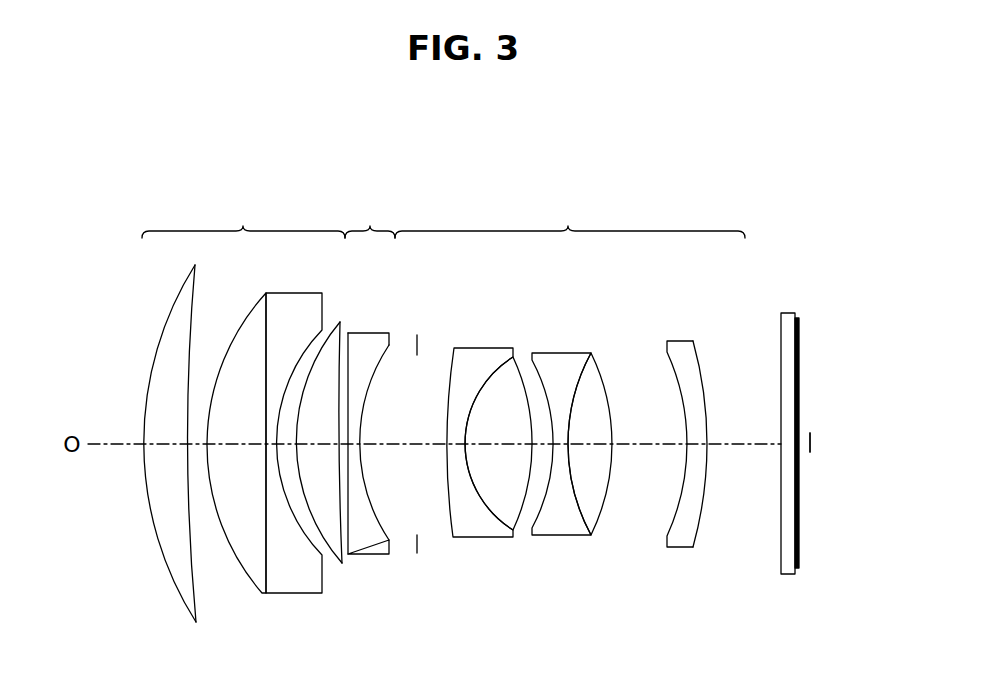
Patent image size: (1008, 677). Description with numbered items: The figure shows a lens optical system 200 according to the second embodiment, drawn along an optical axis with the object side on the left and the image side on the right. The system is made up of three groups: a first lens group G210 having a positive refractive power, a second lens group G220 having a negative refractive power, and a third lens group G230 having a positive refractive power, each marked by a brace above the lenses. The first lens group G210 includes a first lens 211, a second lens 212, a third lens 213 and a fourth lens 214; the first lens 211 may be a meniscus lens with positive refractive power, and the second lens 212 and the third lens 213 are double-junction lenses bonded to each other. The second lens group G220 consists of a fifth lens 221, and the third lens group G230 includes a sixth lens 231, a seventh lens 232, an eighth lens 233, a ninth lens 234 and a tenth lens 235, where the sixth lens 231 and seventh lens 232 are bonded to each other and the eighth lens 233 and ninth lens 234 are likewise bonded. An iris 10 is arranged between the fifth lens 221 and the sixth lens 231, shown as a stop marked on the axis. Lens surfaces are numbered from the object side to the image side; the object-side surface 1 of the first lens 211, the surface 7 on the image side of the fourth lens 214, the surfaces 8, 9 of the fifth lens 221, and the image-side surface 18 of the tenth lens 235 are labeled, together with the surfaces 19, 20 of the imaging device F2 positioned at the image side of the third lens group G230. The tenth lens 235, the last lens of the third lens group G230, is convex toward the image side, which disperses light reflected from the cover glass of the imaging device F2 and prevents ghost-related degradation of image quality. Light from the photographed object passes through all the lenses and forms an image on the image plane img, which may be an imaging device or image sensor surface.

The lens optical system 200 is at (684, 144).
The first lens group G210 is at (243, 218).
The second lens group G220 is at (370, 218).
The third lens group G230 is at (570, 218).
The first lens 211 is at (168, 465).
The second lens 212 is at (258, 570).
The third lens 213 is at (297, 588).
The fourth lens 214 is at (329, 465).
The fifth lens 221 is at (382, 478).
The sixth lens 231 is at (477, 531).
The seventh lens 232 is at (517, 520).
The eighth lens 233 is at (563, 527).
The ninth lens 234 is at (597, 520).
The tenth lens 235 is at (686, 478).
The lens surface 1 is at (168, 310).
The lens surface 7 is at (342, 320).
The lens surface 8 is at (351, 346).
The lens surface 9 is at (392, 346).
The iris 10 is at (422, 341).
The lens surface 18 is at (693, 346).
The lens surface 19 is at (781, 329).
The lens surface 20 is at (798, 327).
The imaging device F2 is at (788, 468).
The image plane img is at (800, 372).